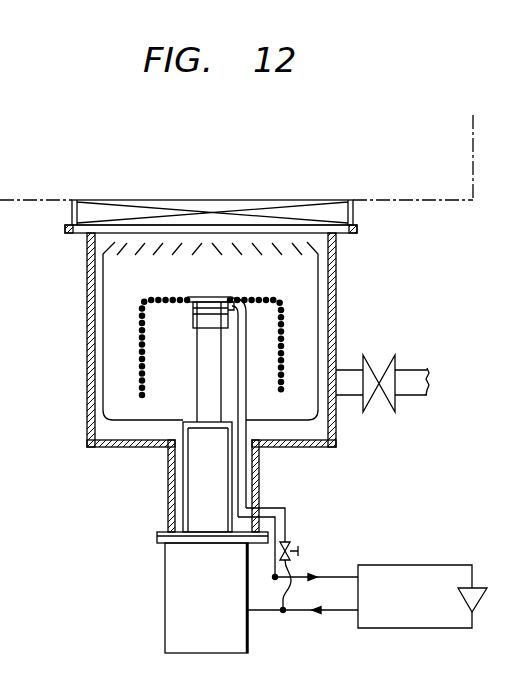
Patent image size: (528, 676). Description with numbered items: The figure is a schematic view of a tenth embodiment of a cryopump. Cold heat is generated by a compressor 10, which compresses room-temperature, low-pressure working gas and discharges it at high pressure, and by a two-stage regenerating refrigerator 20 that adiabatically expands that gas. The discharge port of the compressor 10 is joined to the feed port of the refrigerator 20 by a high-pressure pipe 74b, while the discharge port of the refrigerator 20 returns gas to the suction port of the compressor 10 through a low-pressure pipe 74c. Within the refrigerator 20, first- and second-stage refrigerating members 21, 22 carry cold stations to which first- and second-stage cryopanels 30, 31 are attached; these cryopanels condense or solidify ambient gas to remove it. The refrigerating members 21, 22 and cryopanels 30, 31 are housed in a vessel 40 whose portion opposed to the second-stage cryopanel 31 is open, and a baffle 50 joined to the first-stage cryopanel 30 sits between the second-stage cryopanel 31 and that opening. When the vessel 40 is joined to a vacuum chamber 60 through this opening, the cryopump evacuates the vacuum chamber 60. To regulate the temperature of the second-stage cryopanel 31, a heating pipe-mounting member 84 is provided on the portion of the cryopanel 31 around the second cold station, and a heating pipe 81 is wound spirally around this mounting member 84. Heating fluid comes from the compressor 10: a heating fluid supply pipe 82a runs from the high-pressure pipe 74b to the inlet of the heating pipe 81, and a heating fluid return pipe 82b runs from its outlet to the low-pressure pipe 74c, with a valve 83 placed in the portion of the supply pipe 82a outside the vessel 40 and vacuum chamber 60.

The compressor 10 is at (478, 600).
The refrigerator 20 is at (152, 590).
The first-stage refrigerating member 21 is at (185, 470).
The second-stage refrigerating member 22 is at (197, 393).
The first-stage cryopanel 30 is at (102, 357).
The second-stage cryopanel 31 is at (140, 333).
The vessel 40 is at (337, 262).
The baffle 50 is at (275, 250).
The vacuum chamber 60 is at (462, 205).
The heating pipe 81 is at (207, 318).
The heating fluid supply pipe 82a is at (258, 504).
The heating fluid return pipe 82b is at (283, 523).
The valve 83 is at (292, 548).
The heating pipe-mounting member 84 is at (192, 320).
The high-pressure pipe 74b is at (295, 612).
The low-pressure pipe 74c is at (335, 575).